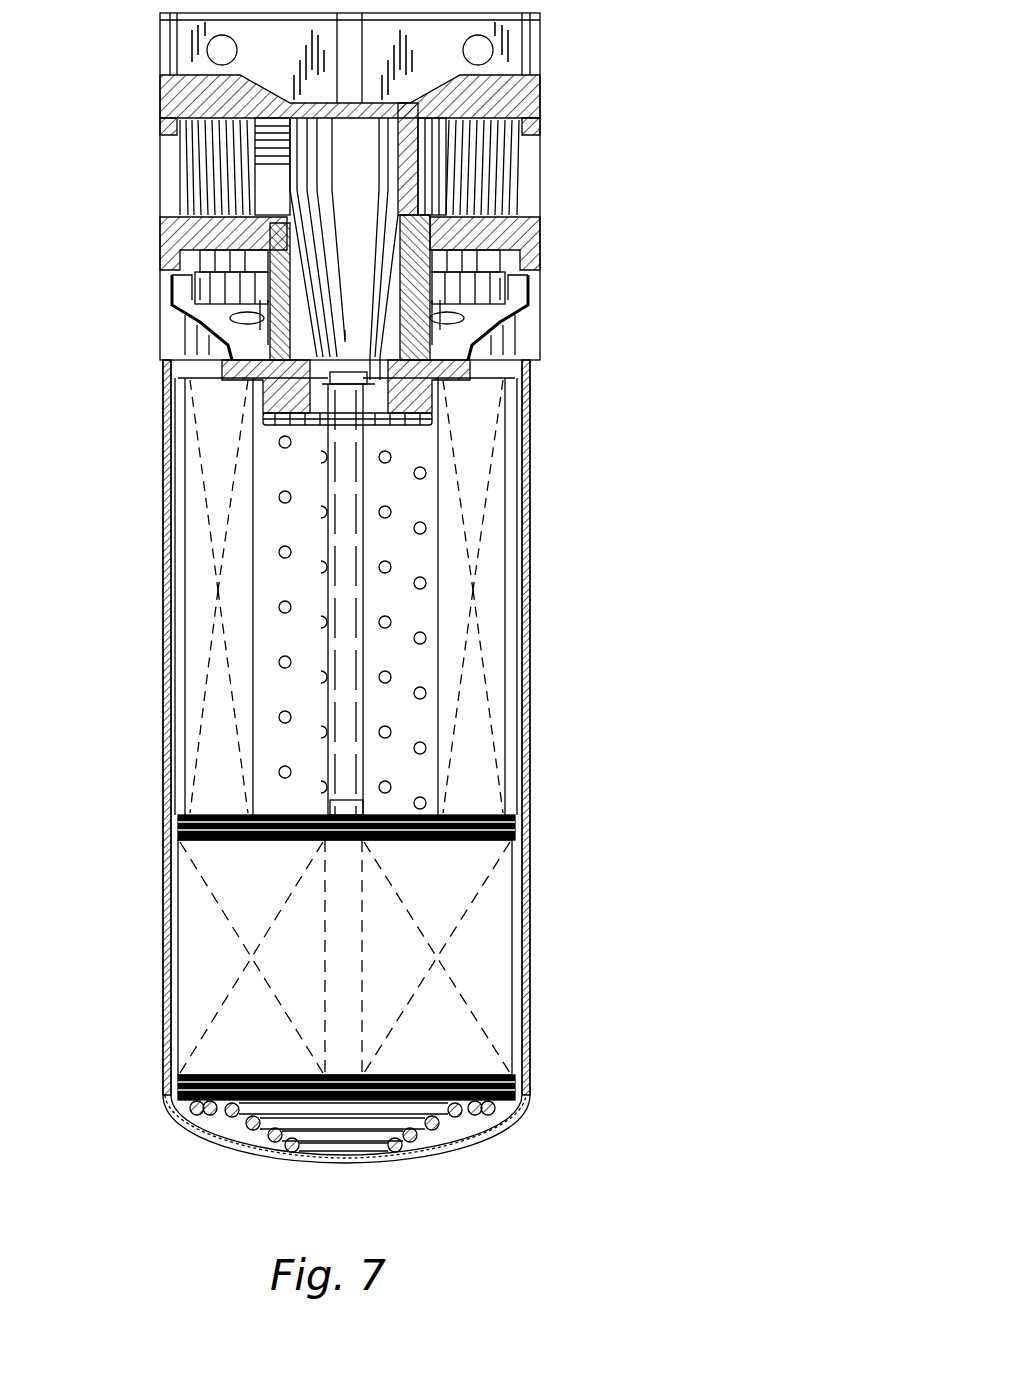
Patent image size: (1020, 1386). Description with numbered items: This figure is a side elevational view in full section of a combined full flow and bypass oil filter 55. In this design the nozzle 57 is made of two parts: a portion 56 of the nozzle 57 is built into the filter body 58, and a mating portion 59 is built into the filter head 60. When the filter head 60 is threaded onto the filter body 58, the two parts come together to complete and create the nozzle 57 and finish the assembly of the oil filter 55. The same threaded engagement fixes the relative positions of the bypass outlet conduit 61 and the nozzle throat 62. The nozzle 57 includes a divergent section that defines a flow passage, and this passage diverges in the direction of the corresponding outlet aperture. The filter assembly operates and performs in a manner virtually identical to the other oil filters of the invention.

The oil filter 55 is at (744, 428).
The portion of the nozzle 56 is at (372, 405).
The nozzle 57 is at (336, 292).
The filter body 58 is at (528, 683).
The mating portion 59 is at (416, 284).
The filter head 60 is at (602, 155).
The bypass outlet conduit 61 is at (350, 586).
The nozzle throat 62 is at (360, 368).